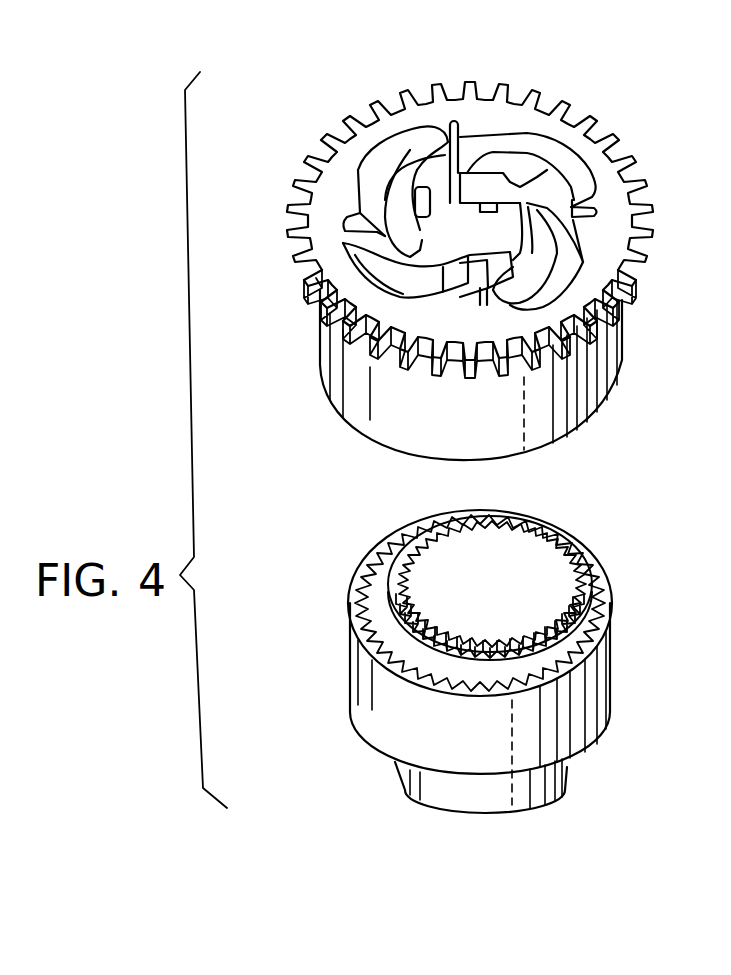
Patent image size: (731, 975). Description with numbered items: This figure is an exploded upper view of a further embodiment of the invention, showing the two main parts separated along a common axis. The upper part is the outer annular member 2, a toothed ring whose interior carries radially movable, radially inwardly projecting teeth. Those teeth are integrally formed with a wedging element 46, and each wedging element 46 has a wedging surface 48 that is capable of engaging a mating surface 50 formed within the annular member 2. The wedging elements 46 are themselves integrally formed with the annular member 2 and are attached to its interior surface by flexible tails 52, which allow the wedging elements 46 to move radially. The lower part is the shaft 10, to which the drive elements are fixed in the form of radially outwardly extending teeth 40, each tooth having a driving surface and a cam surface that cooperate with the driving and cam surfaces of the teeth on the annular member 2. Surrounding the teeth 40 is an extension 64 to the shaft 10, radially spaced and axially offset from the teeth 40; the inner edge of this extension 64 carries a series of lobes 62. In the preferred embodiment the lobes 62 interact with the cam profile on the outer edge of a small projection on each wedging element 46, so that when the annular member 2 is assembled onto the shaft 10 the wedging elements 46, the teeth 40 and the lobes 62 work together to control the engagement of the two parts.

The outer annular member 2 is at (363, 392).
The wedging element 46 is at (398, 187).
The wedging surface 48 is at (398, 233).
The mating surface 50 is at (493, 132).
The flexible tail 52 is at (527, 272).
The shaft 10 is at (487, 649).
The lobes 62 is at (592, 562).
The teeth 40 is at (563, 630).
The extension 64 is at (350, 670).